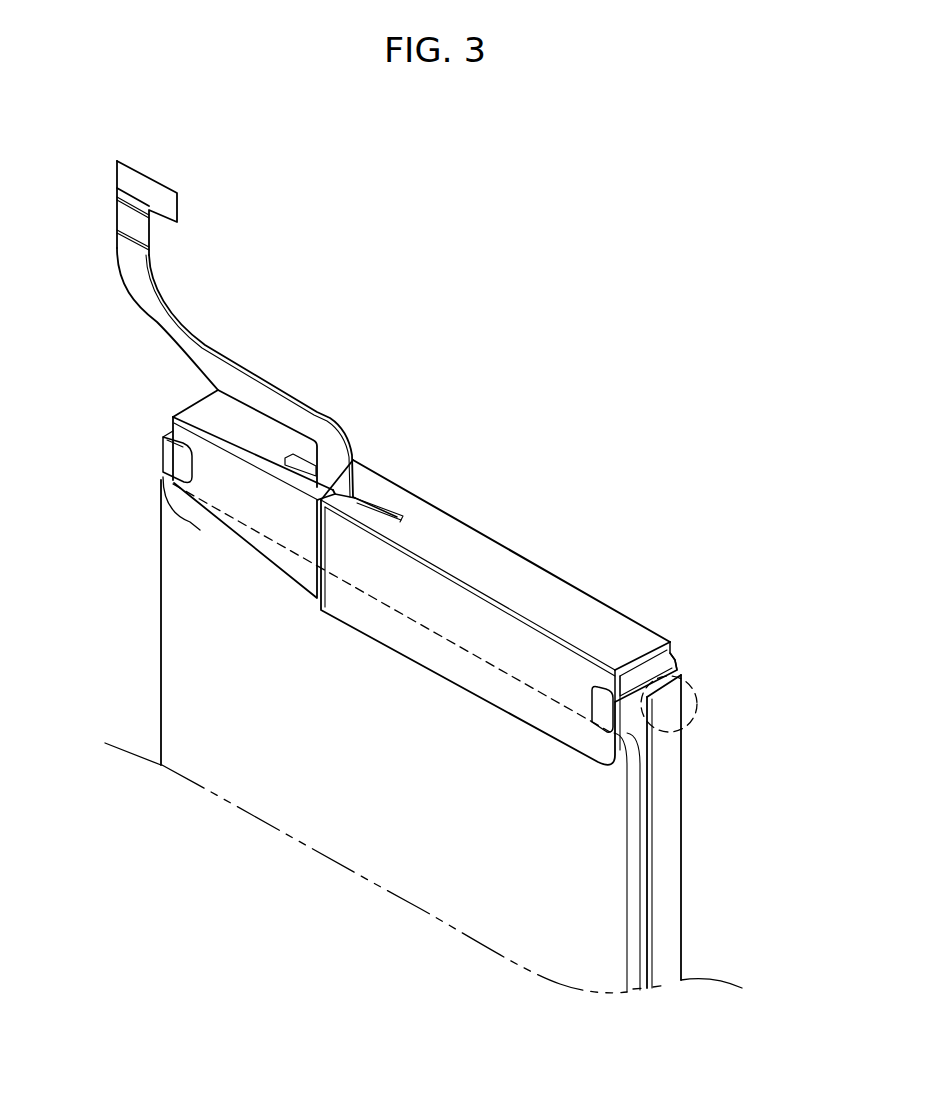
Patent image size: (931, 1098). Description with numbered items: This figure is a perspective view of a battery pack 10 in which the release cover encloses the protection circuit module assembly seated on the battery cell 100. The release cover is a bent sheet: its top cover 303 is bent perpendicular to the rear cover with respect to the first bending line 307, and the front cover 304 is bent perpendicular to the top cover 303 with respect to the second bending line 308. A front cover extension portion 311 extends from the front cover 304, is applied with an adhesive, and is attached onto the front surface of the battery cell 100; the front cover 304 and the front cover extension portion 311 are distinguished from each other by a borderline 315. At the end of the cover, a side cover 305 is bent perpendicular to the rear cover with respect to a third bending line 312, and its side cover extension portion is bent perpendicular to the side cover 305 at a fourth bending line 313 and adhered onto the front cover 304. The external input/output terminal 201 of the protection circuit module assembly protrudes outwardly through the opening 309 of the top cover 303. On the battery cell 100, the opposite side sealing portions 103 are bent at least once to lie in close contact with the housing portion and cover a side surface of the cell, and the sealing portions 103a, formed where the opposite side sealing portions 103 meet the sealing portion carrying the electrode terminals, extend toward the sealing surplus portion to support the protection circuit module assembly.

The battery pack 10 is at (481, 307).
The battery cell 100 is at (183, 655).
The opposite side sealing portions 103 is at (668, 837).
The sealing portions 103a is at (708, 700).
The external input/output terminal 201 is at (167, 313).
The top cover 303 is at (530, 587).
The front cover 304 is at (457, 600).
The side covers 305 is at (632, 705).
The first bending line 307 is at (588, 590).
The second bending line 308 is at (393, 543).
The opening 309 is at (368, 507).
The front cover extension portion 311 is at (188, 520).
The third bending lines 312 is at (678, 670).
The fourth bending lines 313 is at (625, 730).
The borderline 315 is at (252, 530).